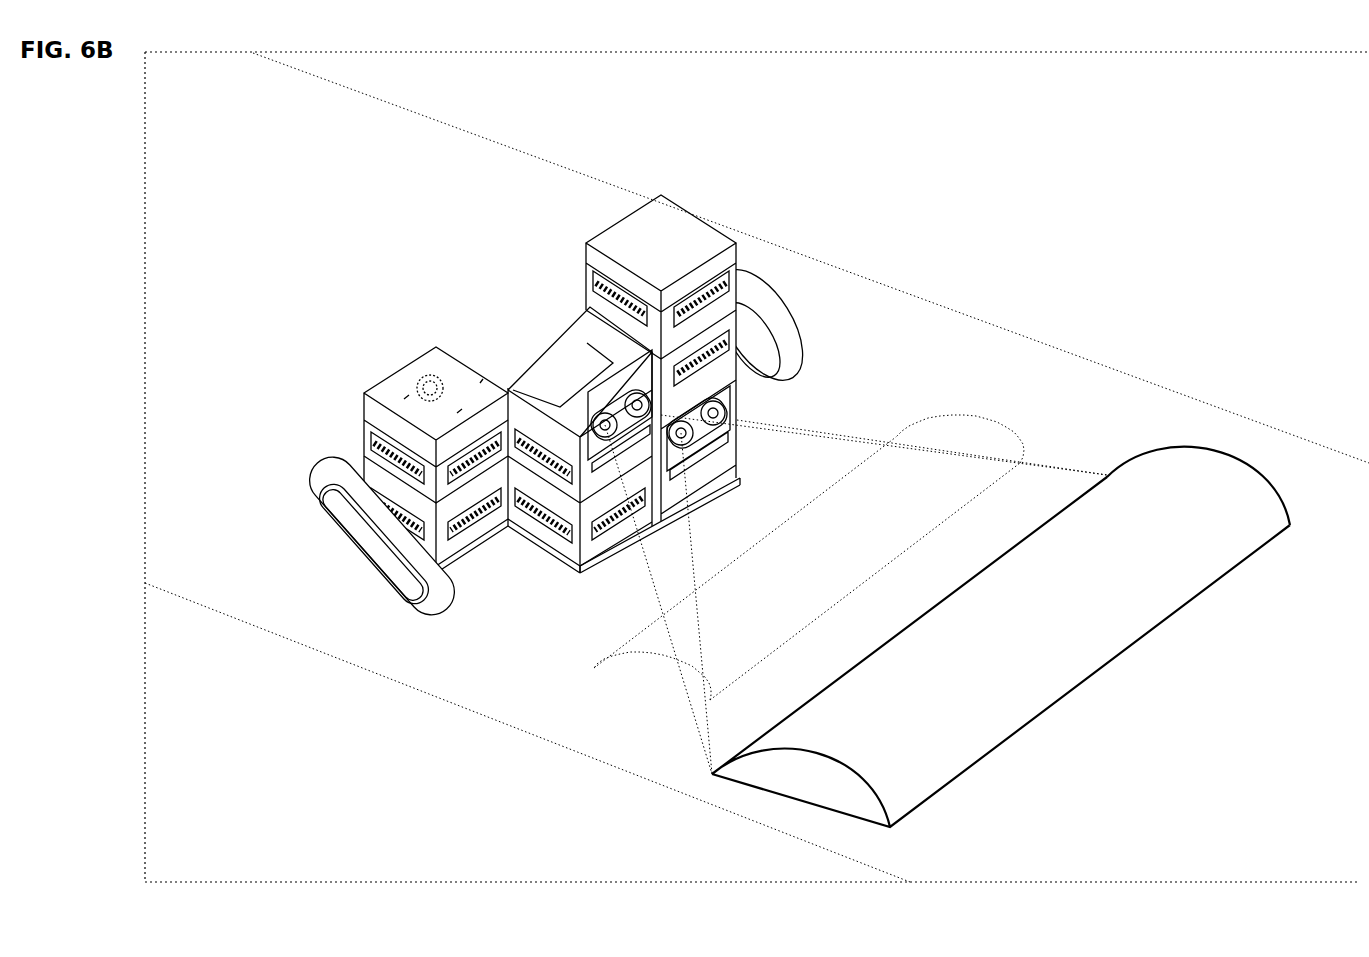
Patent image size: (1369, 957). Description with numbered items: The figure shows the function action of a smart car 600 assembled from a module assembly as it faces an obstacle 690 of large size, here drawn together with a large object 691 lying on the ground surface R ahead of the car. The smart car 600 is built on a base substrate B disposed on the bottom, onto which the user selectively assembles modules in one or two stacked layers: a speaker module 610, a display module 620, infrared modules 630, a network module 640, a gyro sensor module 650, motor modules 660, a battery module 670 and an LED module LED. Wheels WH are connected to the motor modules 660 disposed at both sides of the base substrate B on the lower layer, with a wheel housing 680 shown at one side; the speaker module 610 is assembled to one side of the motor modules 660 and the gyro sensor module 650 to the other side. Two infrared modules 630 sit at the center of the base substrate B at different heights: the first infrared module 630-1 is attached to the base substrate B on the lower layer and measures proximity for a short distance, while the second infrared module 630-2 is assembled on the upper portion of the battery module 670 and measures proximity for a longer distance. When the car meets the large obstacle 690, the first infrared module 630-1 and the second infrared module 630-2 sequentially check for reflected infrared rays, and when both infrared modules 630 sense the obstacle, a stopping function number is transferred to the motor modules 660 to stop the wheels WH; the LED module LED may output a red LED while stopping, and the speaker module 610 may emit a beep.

The smart car 600 is at (572, 375).
The speaker module 610 is at (423, 367).
The display module 620 is at (500, 367).
The infrared module 630 is at (624, 319).
The first infrared module 630-1 is at (598, 330).
The second infrared module 630-2 is at (557, 370).
The network module 640 is at (545, 353).
The gyro sensor module 650 is at (661, 228).
The motor module 660 is at (487, 518).
The battery module 670 is at (582, 548).
The wheel module 680 is at (762, 372).
The obstacle 690 is at (982, 442).
The object (half cylinder) 691 is at (1207, 480).
The wheel WH is at (347, 468).
The base substrate B is at (708, 494).
The LED module LED is at (737, 425).
The road R is at (1140, 398).